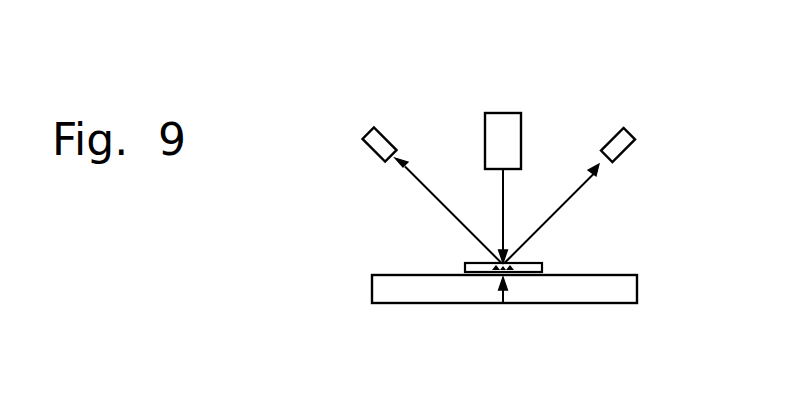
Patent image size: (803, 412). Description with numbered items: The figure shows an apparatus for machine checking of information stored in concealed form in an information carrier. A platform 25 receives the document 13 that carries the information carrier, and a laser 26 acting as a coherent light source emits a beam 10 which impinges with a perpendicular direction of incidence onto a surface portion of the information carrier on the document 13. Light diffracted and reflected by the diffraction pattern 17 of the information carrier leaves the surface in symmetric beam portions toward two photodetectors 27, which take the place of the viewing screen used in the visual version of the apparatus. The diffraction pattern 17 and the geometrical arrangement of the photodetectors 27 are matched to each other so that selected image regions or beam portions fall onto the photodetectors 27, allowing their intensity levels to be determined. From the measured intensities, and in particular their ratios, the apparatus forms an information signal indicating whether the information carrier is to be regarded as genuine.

The laser 26 is at (510, 127).
The beam 10 is at (503, 205).
The photodetectors 27 is at (377, 140).
The document 13 is at (538, 265).
The platform 25 is at (628, 287).
The diffraction pattern 17 is at (503, 303).